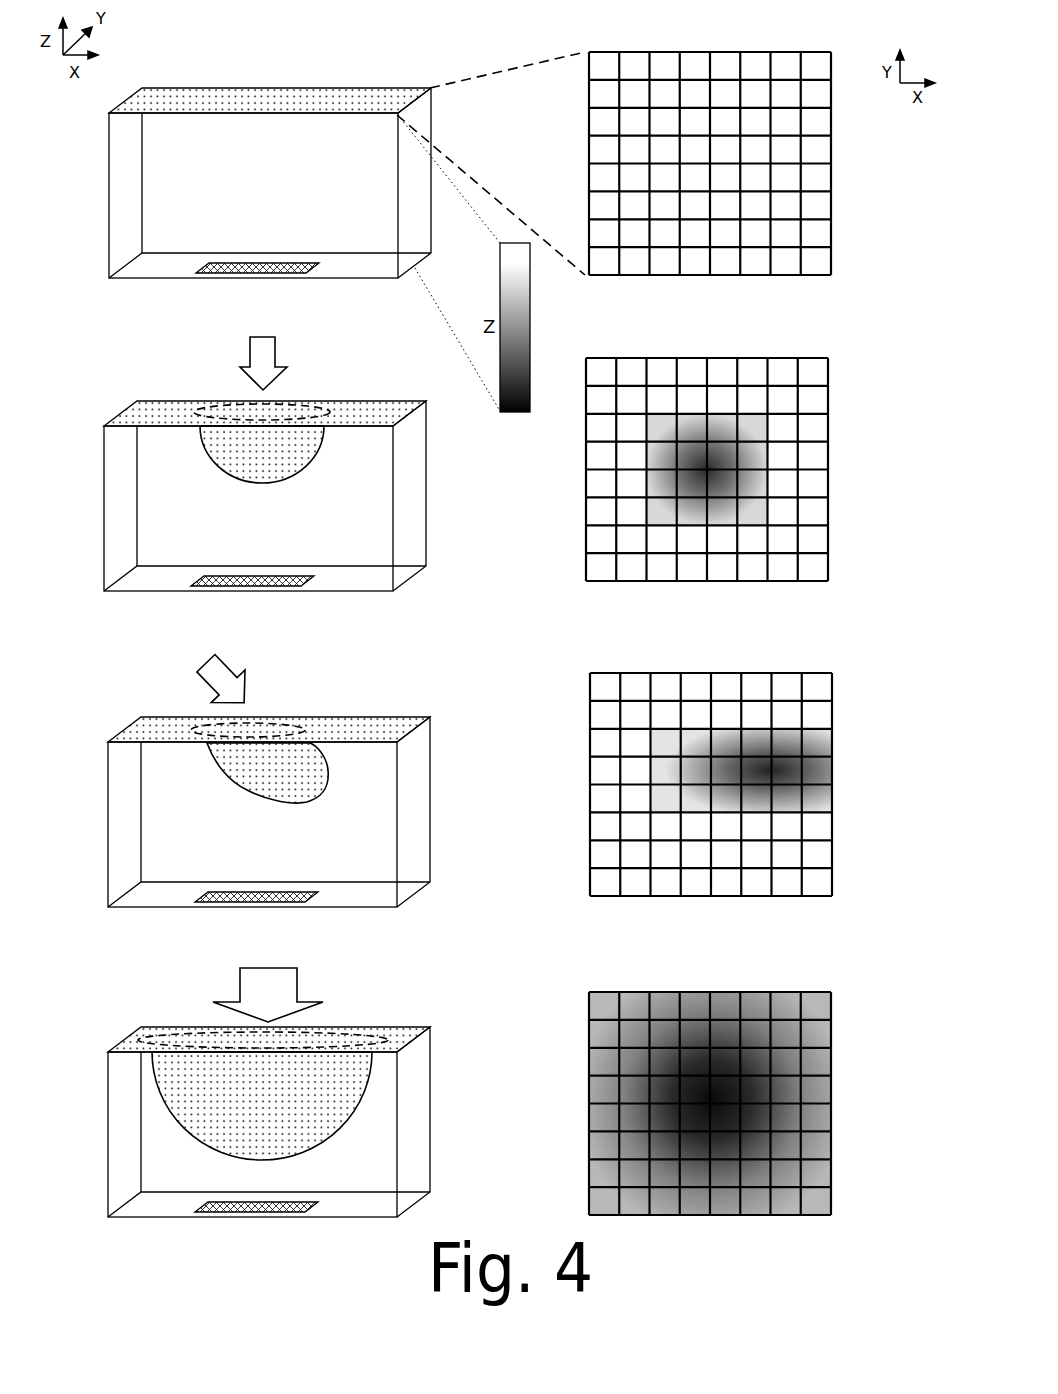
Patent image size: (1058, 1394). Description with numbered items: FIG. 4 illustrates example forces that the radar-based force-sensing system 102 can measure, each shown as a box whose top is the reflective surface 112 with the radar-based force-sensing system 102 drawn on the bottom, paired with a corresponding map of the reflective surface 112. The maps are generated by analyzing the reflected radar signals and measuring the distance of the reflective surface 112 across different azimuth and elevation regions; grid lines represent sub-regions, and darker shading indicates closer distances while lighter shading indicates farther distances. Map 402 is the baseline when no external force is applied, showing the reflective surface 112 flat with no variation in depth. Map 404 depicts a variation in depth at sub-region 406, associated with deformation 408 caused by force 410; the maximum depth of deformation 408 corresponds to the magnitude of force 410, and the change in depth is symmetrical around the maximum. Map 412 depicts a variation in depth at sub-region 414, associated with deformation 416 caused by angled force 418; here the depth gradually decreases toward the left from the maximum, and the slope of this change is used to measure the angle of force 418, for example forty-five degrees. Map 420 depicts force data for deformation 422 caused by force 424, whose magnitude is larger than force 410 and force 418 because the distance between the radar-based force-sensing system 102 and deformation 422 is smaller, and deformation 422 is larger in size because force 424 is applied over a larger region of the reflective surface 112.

The radar-based force-sensing system 102 is at (277, 273).
The reflective surface 112 is at (348, 88).
The map 402 is at (838, 41).
The map 404 is at (836, 349).
The sub-region 406 is at (716, 463).
The deformation 408 is at (290, 470).
The force 410 is at (275, 352).
The map 412 is at (845, 662).
The sub-region 414 is at (760, 773).
The deformation 416 is at (293, 803).
The force 418 is at (246, 673).
The map 420 is at (845, 970).
The deformation 422 is at (282, 1150).
The force 424 is at (297, 985).